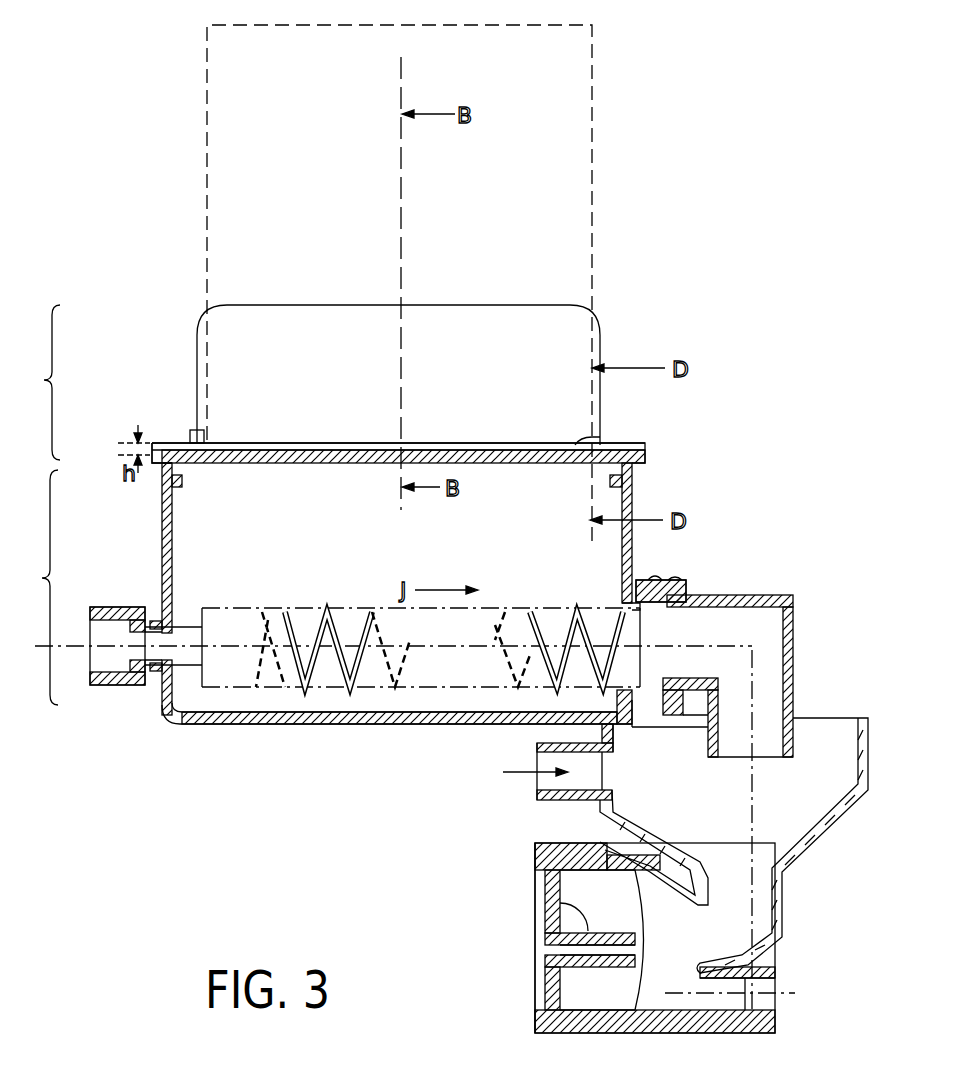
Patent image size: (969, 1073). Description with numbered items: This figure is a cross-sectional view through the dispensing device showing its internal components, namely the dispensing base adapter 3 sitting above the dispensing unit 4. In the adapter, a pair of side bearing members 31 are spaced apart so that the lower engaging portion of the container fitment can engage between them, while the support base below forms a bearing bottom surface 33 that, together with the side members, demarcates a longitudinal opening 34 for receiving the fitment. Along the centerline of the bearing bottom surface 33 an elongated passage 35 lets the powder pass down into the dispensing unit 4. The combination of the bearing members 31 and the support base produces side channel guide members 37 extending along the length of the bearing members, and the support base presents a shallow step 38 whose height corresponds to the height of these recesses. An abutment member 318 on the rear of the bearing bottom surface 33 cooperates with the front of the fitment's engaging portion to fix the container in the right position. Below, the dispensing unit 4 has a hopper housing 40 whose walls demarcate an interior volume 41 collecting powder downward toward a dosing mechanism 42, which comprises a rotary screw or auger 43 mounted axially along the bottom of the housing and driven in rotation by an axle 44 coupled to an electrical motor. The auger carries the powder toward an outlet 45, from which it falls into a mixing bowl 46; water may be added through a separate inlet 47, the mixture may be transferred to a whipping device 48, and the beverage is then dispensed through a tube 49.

The dispensing base adapter 3 is at (44, 382).
The dispensing unit 4 is at (40, 587).
The side bearing member 31 is at (567, 330).
The abutment member 318 is at (192, 436).
The bearing bottom surface 33 is at (412, 446).
The longitudinal opening 34 is at (600, 410).
The elongated passage 35 is at (493, 465).
The channel guide member 37 is at (330, 443).
The shallow step 38 is at (170, 445).
The housing 40 is at (374, 593).
The interior volume 41 is at (205, 575).
The dosing mechanism 42 is at (245, 690).
The rotary screw or auger 43 is at (335, 682).
The axle 44 is at (160, 675).
The outlet 45 is at (755, 668).
The mixing bowl 46 is at (870, 730).
The inlet 47 is at (545, 800).
The whipping device 48 is at (565, 902).
The tube 49 is at (670, 938).